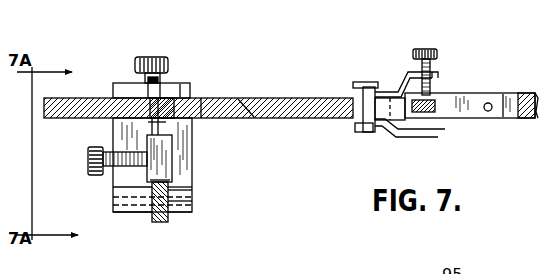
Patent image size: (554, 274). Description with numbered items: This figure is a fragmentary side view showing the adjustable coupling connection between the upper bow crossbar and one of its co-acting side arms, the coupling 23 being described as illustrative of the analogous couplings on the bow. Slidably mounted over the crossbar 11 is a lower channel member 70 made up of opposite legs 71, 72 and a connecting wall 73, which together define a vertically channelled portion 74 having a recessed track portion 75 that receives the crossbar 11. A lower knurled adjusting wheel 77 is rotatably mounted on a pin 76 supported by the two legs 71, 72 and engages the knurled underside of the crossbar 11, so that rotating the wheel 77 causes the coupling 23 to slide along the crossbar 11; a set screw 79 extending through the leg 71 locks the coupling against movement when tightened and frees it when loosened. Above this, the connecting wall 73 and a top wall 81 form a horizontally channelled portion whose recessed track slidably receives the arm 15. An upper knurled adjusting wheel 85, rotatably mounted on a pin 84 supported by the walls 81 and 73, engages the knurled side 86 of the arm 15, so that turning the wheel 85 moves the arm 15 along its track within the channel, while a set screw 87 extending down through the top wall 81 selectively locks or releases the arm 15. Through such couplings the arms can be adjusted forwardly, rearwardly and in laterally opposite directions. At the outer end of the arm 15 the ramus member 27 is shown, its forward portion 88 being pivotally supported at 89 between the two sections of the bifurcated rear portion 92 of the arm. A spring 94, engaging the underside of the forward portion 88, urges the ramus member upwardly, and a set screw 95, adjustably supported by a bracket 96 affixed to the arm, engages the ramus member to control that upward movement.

The arm 15 is at (322, 95).
The pin 84 is at (148, 95).
The top wall 81 is at (179, 92).
The upper knurled adjusting wheel 85 is at (202, 98).
The knurled side 86 is at (247, 108).
The set screw 87 is at (151, 57).
The coupling 23 is at (191, 169).
The lower channel member 70 is at (112, 190).
The leg 71 is at (137, 212).
The leg 72 is at (180, 212).
The connecting wall 73 is at (162, 125).
The crossbar 11 is at (168, 151).
The recessed track portion 75 is at (170, 158).
The set screw 79 is at (87, 170).
The lower knurled adjusting wheel 77 is at (158, 222).
The vertically channelled portion 74 is at (170, 189).
The pin 76 is at (170, 201).
The bracket 96 is at (397, 82).
The spring 94 is at (435, 128).
The set screw 95 is at (425, 48).
The forward portion 88 is at (443, 93).
The ramus member 27 is at (505, 93).
The pivot 89 is at (489, 112).
The bifurcated rear portion 92 is at (504, 108).